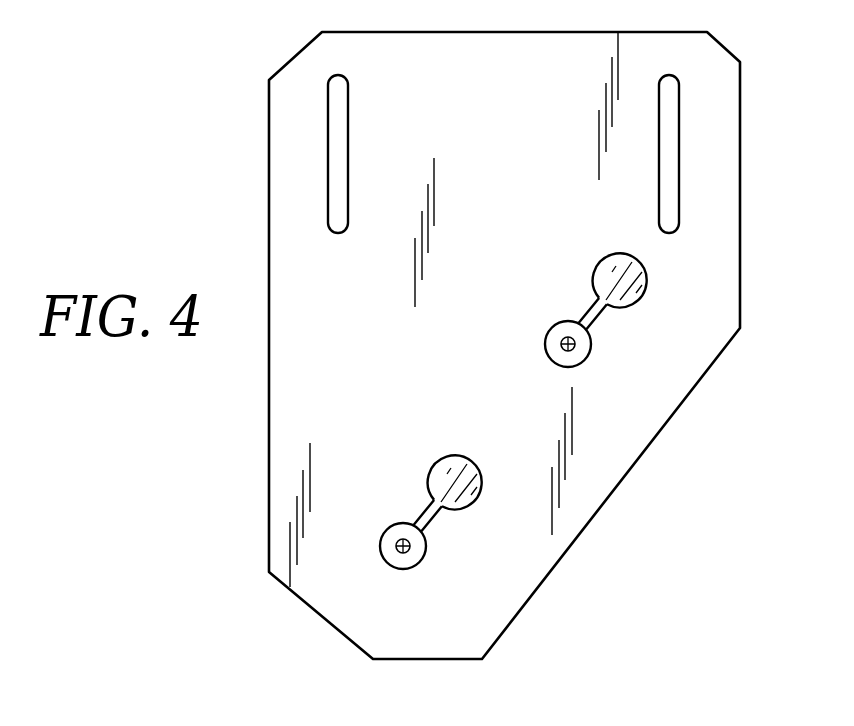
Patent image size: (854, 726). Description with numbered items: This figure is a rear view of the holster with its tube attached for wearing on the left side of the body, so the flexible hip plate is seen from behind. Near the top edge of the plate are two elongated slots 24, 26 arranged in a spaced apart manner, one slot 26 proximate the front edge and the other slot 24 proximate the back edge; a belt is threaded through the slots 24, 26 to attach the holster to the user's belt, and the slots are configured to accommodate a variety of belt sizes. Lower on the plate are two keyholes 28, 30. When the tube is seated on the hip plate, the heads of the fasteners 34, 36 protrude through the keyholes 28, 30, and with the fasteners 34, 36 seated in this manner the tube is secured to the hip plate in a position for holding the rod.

The elongated slot 24 is at (348, 117).
The elongated slot 26 is at (678, 100).
The keyhole 28 is at (582, 264).
The keyhole 30 is at (425, 462).
The fastener 34 is at (404, 562).
The fastener 36 is at (569, 357).